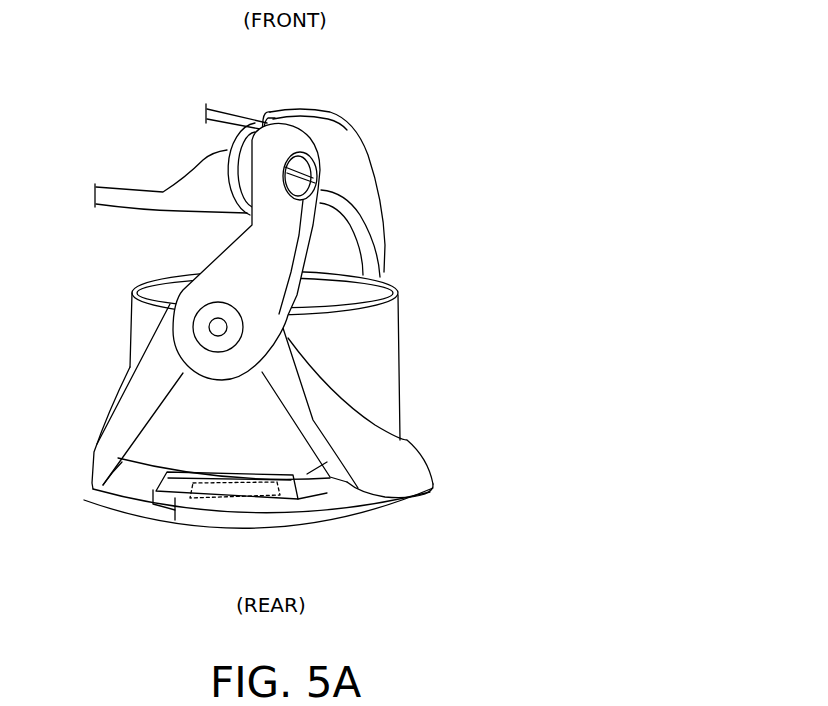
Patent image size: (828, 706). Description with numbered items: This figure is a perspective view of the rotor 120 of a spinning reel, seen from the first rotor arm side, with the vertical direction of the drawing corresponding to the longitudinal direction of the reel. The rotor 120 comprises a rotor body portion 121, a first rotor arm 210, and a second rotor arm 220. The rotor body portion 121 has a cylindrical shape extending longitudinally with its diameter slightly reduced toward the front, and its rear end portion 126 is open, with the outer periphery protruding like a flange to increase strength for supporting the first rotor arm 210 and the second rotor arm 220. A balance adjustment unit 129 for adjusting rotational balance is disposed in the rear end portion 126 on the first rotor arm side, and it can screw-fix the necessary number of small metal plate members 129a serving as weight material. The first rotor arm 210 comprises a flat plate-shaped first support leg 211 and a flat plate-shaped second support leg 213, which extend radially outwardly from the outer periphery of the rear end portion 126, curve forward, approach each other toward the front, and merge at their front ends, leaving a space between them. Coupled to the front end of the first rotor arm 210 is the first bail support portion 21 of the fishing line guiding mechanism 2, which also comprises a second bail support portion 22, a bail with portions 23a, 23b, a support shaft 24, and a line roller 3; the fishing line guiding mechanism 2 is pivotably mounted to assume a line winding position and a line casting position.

The fishing line guiding mechanism 2 is at (149, 118).
The line roller 3 is at (232, 166).
The first bail support portion 21 is at (228, 252).
The second bail support portion 22 is at (298, 107).
The bail 23a is at (203, 168).
The bail 23b is at (232, 112).
The support shaft 24 is at (317, 174).
The rotor 120 is at (430, 78).
The rotor body portion 121 is at (402, 342).
The rear end portion 126 is at (296, 522).
The balance adjustment unit 129 is at (178, 498).
The small metal plate member 129a is at (248, 503).
The first rotor arm 210 is at (437, 479).
The first support leg 211 is at (93, 489).
The second support leg 213 is at (362, 492).
The second rotor arm 220 is at (388, 266).